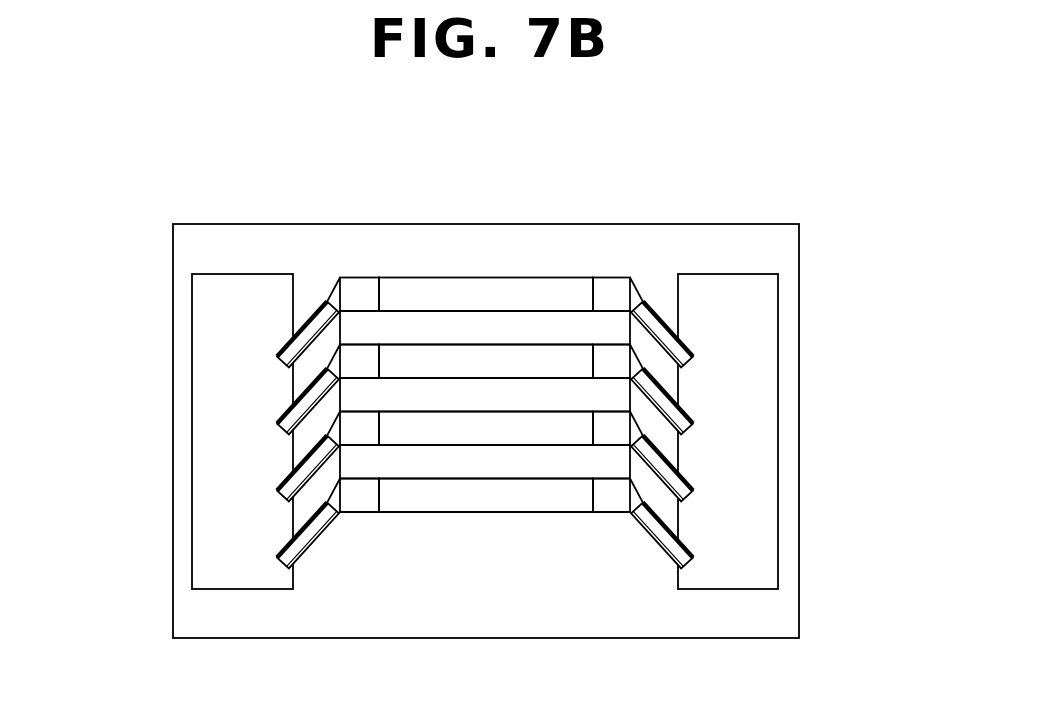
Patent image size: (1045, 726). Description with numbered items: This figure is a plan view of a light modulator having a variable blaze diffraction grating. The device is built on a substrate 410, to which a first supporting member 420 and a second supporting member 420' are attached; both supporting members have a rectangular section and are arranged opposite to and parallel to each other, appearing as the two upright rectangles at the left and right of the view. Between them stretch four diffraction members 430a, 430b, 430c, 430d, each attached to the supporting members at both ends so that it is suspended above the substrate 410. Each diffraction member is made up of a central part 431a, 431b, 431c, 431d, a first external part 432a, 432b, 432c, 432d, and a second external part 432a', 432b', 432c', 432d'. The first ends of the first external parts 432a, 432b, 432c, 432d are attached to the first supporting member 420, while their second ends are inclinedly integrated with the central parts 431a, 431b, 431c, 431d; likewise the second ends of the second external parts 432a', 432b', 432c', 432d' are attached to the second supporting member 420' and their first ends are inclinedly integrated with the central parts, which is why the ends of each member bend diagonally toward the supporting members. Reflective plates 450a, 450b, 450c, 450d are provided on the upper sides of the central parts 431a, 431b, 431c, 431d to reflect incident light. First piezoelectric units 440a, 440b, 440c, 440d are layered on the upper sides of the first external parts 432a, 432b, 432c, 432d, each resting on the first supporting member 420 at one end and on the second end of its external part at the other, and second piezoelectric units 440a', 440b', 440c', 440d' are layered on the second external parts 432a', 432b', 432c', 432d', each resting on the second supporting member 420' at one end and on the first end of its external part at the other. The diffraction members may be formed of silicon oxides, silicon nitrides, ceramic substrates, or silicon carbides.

The substrate 410 is at (788, 612).
The first supporting member 420 is at (170, 431).
The second supporting member 420' is at (803, 431).
The diffraction member 430a is at (496, 522).
The diffraction member 430b is at (461, 455).
The diffraction member 430c is at (428, 388).
The diffraction member 430d is at (406, 322).
The central part 431a is at (372, 490).
The central part 431b is at (372, 420).
The central part 431c is at (368, 350).
The central part 431d is at (372, 288).
The first external part 432a is at (191, 495).
The first external part 432b is at (191, 428).
The first external part 432c is at (191, 361).
The first external part 432d is at (191, 294).
The second external part 432a' is at (767, 481).
The second external part 432b' is at (767, 414).
The second external part 432c' is at (766, 348).
The second external part 432d' is at (767, 283).
The first piezoelectric unit 440a is at (213, 528).
The first piezoelectric unit 440b is at (213, 462).
The first piezoelectric unit 440c is at (213, 395).
The first piezoelectric unit 440d is at (213, 328).
The second piezoelectric unit 440a' is at (762, 526).
The second piezoelectric unit 440b' is at (762, 459).
The second piezoelectric unit 440c' is at (761, 392).
The second piezoelectric unit 440d' is at (762, 325).
The reflective plate 450a is at (498, 488).
The reflective plate 450b is at (495, 417).
The reflective plate 450c is at (489, 353).
The reflective plate 450d is at (468, 288).